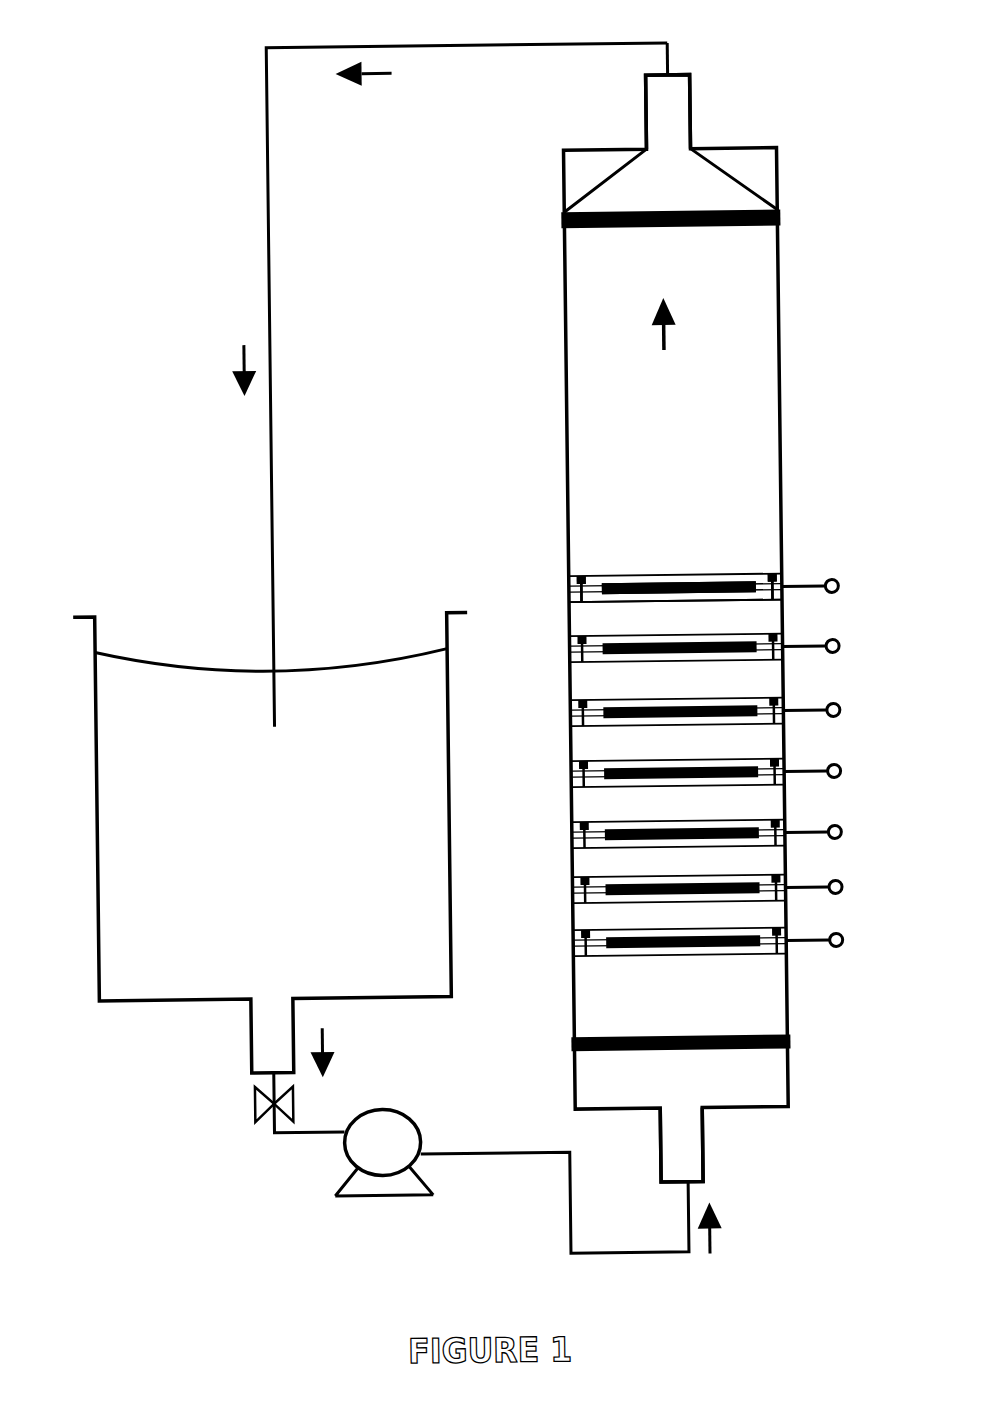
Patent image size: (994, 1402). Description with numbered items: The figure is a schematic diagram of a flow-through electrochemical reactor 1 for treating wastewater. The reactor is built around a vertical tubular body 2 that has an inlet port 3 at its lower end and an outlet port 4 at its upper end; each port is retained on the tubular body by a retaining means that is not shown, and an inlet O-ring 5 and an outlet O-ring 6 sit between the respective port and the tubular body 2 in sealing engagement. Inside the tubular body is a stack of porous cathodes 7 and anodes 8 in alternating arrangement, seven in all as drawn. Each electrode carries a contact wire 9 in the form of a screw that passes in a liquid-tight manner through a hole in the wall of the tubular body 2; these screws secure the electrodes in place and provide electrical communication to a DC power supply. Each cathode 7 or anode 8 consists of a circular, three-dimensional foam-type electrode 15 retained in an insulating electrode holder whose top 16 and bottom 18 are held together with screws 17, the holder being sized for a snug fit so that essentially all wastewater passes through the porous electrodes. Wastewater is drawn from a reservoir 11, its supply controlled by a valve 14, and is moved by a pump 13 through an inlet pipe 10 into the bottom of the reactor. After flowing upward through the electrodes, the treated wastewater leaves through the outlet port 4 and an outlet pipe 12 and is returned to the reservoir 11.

The electrochemical reactor 1 is at (541, 318).
The tubular body 2 is at (664, 361).
The inlet port 3 is at (704, 1144).
The outlet port 4 is at (683, 95).
The inlet O-ring 5 is at (658, 1043).
The outlet O-ring 6 is at (648, 220).
The porous cathode 7 is at (658, 768).
The porous anode 8 is at (657, 772).
The contact wire 9 is at (827, 746).
The inlet pipe 10 is at (571, 1203).
The reservoir 11 is at (273, 843).
The outlet pipe 12 is at (452, 366).
The pump 13 is at (399, 1148).
The valve 14 is at (275, 1081).
The foam-type electrode 15 is at (626, 580).
The electrode holder top 16 is at (687, 571).
The screw 17 is at (775, 570).
The electrode holder bottom 18 is at (682, 604).